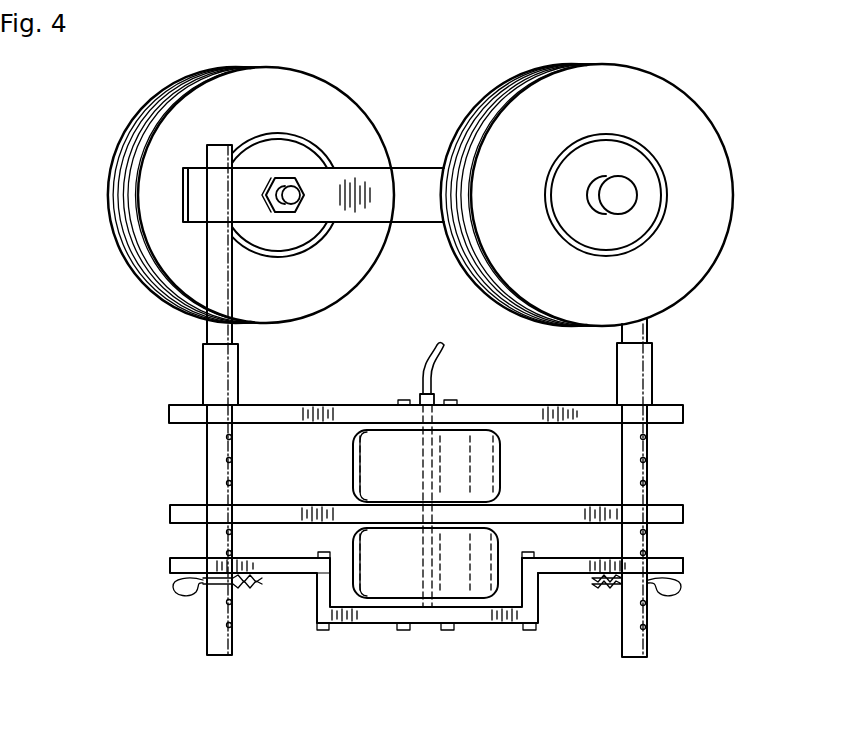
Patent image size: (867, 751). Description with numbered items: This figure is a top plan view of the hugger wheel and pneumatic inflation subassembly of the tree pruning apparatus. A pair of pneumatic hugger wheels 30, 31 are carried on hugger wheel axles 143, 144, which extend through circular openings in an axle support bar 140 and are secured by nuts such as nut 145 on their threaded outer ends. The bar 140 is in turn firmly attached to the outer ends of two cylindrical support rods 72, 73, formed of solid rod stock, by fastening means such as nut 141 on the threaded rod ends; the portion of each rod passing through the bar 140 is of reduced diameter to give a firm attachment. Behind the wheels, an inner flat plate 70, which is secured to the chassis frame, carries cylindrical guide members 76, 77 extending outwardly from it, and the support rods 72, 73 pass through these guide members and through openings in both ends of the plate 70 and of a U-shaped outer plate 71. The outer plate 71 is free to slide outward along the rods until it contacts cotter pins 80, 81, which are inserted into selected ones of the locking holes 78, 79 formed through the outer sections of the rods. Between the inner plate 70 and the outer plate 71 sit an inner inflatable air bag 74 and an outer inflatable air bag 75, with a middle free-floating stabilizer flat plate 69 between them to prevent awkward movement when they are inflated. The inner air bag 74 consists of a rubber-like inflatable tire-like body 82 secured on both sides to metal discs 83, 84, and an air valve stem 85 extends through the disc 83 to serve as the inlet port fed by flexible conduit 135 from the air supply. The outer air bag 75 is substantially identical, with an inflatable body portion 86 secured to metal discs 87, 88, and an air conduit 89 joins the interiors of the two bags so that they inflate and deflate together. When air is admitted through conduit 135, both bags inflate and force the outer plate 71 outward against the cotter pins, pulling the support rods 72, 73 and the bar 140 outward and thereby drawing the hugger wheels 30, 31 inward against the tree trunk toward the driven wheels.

The hugger wheel 30 is at (128, 127).
The hugger wheel 31 is at (715, 122).
The stabilizer flat plate 69 is at (245, 502).
The inner flat plate 70 is at (270, 405).
The U-shaped outer plate 71 is at (683, 568).
The support rod 72 is at (205, 623).
The support rod 73 is at (620, 650).
The inner inflatable air bag 74 is at (502, 453).
The outer inflatable air bag 75 is at (502, 540).
The cylindrical guide member 76 is at (203, 370).
The cylindrical guide member 77 is at (652, 372).
The locking holes 78 is at (233, 625).
The locking holes 79 is at (647, 627).
The cotter pin 80 is at (172, 592).
The cotter pin 81 is at (682, 587).
The inflatable tire-like body 82 is at (373, 457).
The metal disc 83 is at (453, 430).
The metal disc 84 is at (487, 502).
The air valve stem 85 is at (420, 398).
The inflatable body portion 86 is at (360, 550).
The metal disc 87 is at (533, 520).
The metal disc 88 is at (433, 607).
The air conduit 89 is at (413, 510).
The flexible conduit 135 is at (440, 363).
The axle support bar 140 is at (430, 209).
The nut 141 is at (207, 153).
The hugger wheel axle 143 is at (303, 180).
The hugger wheel axle 144 is at (618, 195).
The nut 145 is at (283, 178).